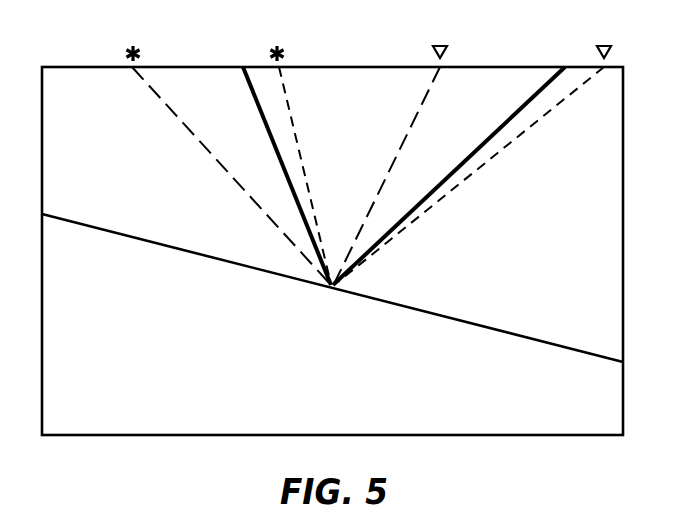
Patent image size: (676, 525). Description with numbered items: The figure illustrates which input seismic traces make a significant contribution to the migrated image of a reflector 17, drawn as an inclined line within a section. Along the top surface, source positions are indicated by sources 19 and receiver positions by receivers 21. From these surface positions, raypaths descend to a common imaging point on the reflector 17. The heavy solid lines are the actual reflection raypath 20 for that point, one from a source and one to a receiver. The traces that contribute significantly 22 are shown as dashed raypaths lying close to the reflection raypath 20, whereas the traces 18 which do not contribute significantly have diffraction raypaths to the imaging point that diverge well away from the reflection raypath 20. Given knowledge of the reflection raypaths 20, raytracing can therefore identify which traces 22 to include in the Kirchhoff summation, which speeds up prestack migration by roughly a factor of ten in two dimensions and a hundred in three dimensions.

The reflector 17 is at (144, 243).
The traces which do not contribute significantly 18 is at (186, 127).
The sources 19 is at (265, 43).
The reflection raypath 20 is at (468, 158).
The receivers 21 is at (593, 43).
The traces that contribute significantly 22 is at (291, 113).